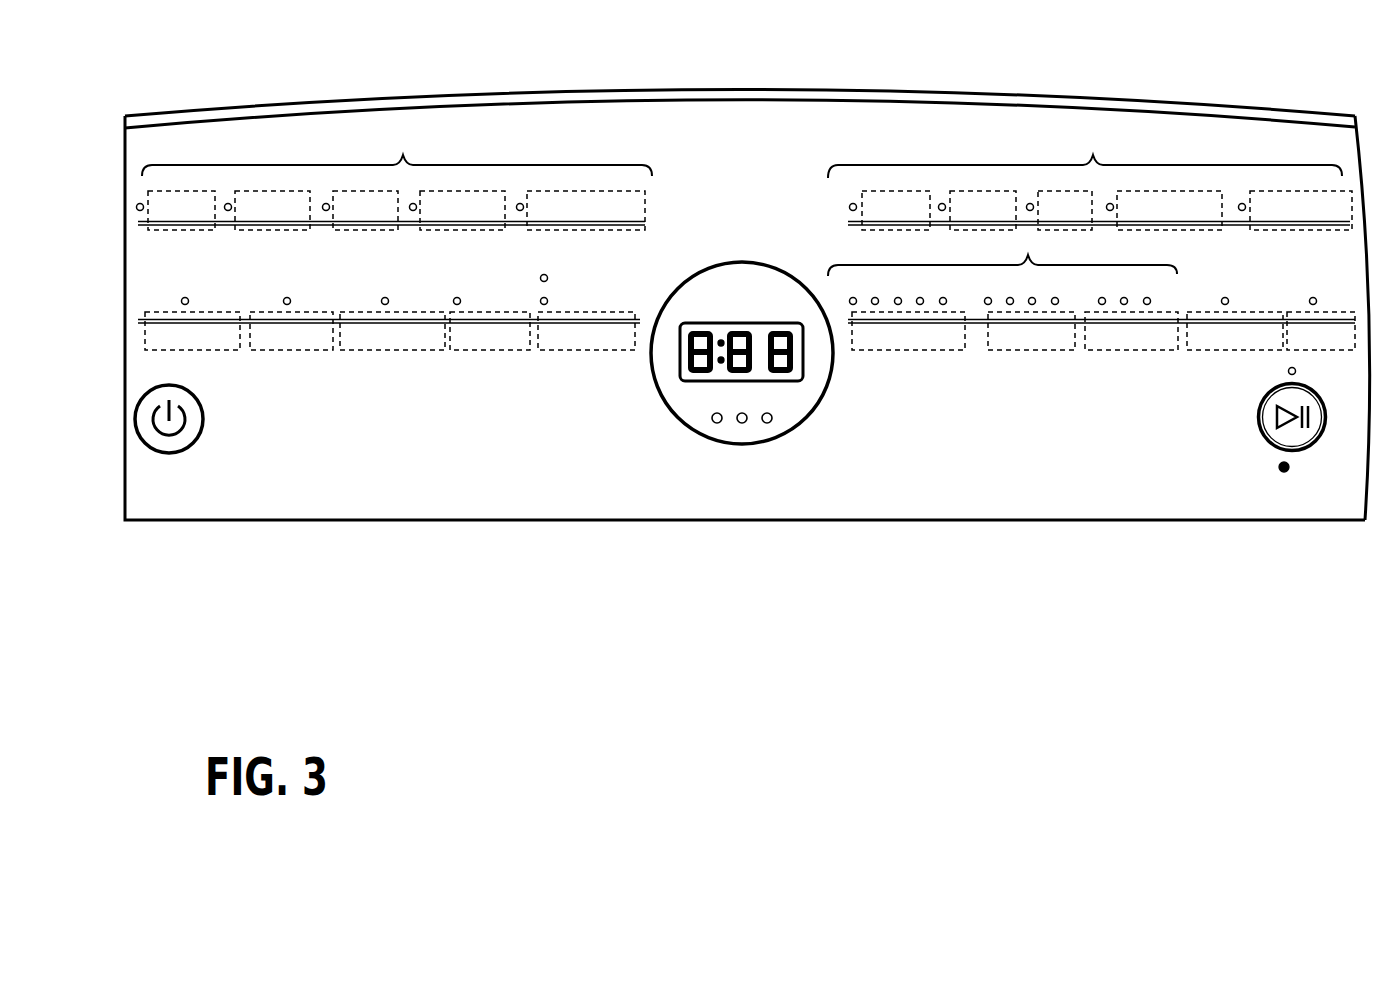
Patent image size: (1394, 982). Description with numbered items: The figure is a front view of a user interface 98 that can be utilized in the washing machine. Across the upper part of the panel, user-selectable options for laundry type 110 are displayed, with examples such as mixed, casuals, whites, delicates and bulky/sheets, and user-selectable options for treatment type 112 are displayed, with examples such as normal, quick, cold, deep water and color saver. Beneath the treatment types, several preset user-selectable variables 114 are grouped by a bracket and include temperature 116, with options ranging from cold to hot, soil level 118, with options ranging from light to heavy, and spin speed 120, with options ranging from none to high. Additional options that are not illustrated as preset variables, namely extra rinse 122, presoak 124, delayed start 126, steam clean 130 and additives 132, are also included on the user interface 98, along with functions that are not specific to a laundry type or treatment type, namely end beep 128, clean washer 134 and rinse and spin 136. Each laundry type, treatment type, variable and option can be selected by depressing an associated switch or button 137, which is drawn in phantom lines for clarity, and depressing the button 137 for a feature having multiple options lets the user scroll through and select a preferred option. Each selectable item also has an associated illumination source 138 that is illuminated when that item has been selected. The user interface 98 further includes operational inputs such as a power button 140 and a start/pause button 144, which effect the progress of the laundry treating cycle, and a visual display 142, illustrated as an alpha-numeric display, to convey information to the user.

The user interface 98 is at (777, 170).
The user-selectable options for laundry type 110 is at (395, 178).
The user-selectable options for treatment type 112 is at (1090, 178).
The user-selectable variables 114 is at (1002, 267).
The temperature 116 is at (900, 352).
The soil level 118 is at (1030, 352).
The spin speed 120 is at (1128, 352).
The extra rinse 122 is at (1212, 352).
The presoak 124 is at (1322, 345).
The delayed start 126 is at (210, 352).
The end beep 128 is at (298, 352).
The steam clean 130 is at (394, 352).
The additives 132 is at (495, 352).
The clean washer 134 is at (650, 268).
The rinse and spin 136 is at (643, 316).
The button 137 is at (368, 352).
The illumination source 138 is at (385, 298).
The power button 140 is at (175, 455).
The visual display 142 is at (802, 378).
The start/pause button 144 is at (1268, 442).